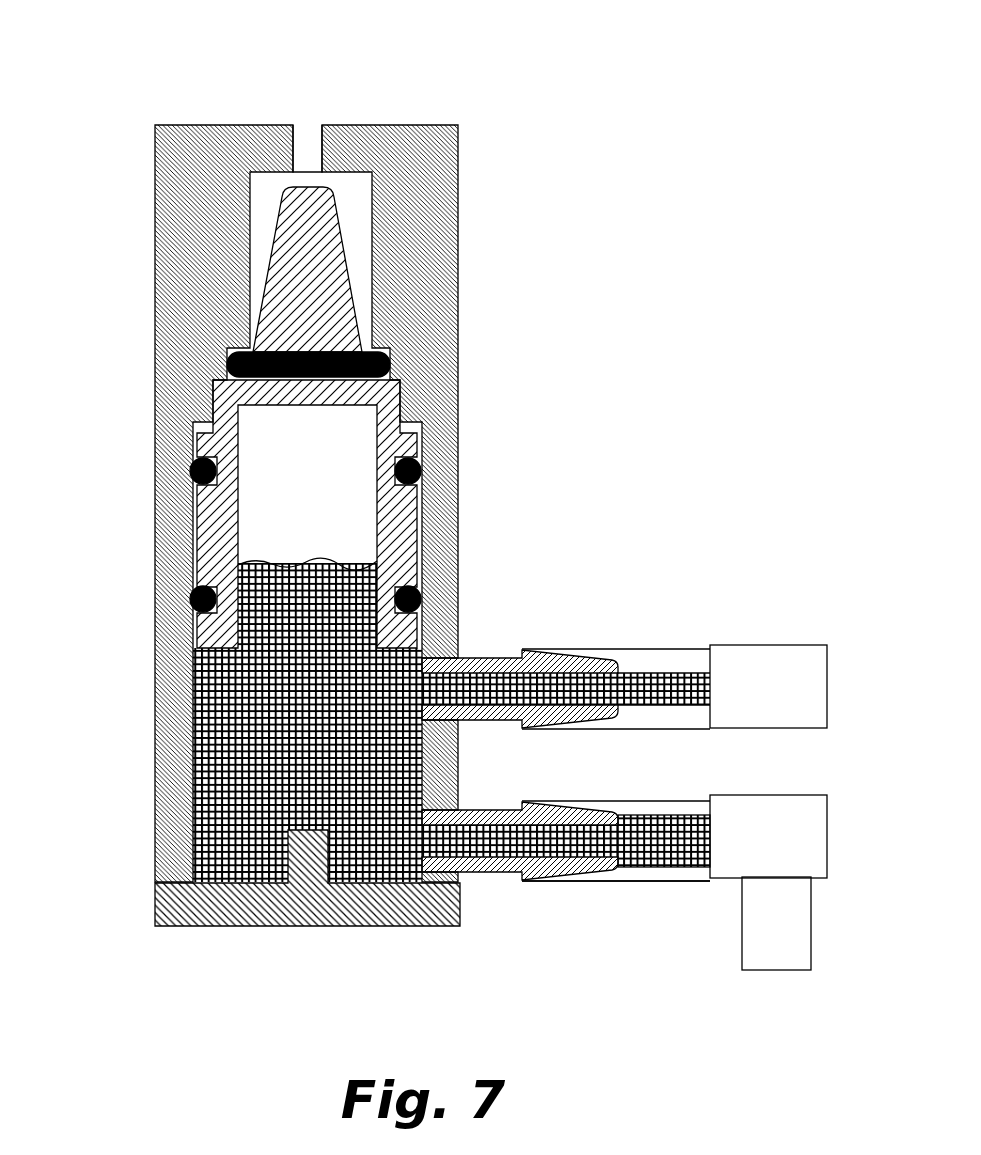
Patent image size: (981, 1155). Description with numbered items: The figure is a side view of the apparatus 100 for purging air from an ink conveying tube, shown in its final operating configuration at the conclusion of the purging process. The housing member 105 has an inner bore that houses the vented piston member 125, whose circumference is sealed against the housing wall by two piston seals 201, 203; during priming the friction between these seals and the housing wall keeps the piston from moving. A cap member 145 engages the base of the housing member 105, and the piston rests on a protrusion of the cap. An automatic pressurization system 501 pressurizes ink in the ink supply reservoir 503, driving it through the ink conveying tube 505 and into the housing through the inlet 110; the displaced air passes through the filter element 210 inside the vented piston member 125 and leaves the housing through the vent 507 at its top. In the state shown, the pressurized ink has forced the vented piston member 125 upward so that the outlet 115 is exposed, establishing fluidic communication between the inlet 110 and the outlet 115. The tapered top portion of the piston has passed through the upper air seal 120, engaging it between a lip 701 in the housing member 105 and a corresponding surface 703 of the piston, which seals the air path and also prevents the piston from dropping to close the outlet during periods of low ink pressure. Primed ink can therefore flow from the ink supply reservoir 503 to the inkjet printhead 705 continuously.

The apparatus for purging air 100 is at (143, 62).
The housing member 105 is at (155, 523).
The inlet 110 is at (555, 818).
The outlet 115 is at (553, 653).
The upper air seal 120 is at (310, 353).
The vented piston member 125 is at (390, 355).
The cap member 145 is at (400, 928).
The piston seal 201 is at (420, 472).
The piston seal 203 is at (420, 605).
The filter element 210 is at (288, 477).
The automatic pressurization system 501 is at (748, 947).
The ink supply reservoir 503 is at (723, 870).
The ink conveying tube 505 is at (638, 870).
The vent 507 is at (317, 143).
The lip 701 is at (232, 352).
The corresponding surface 703 is at (217, 383).
The inkjet printhead 705 is at (742, 652).